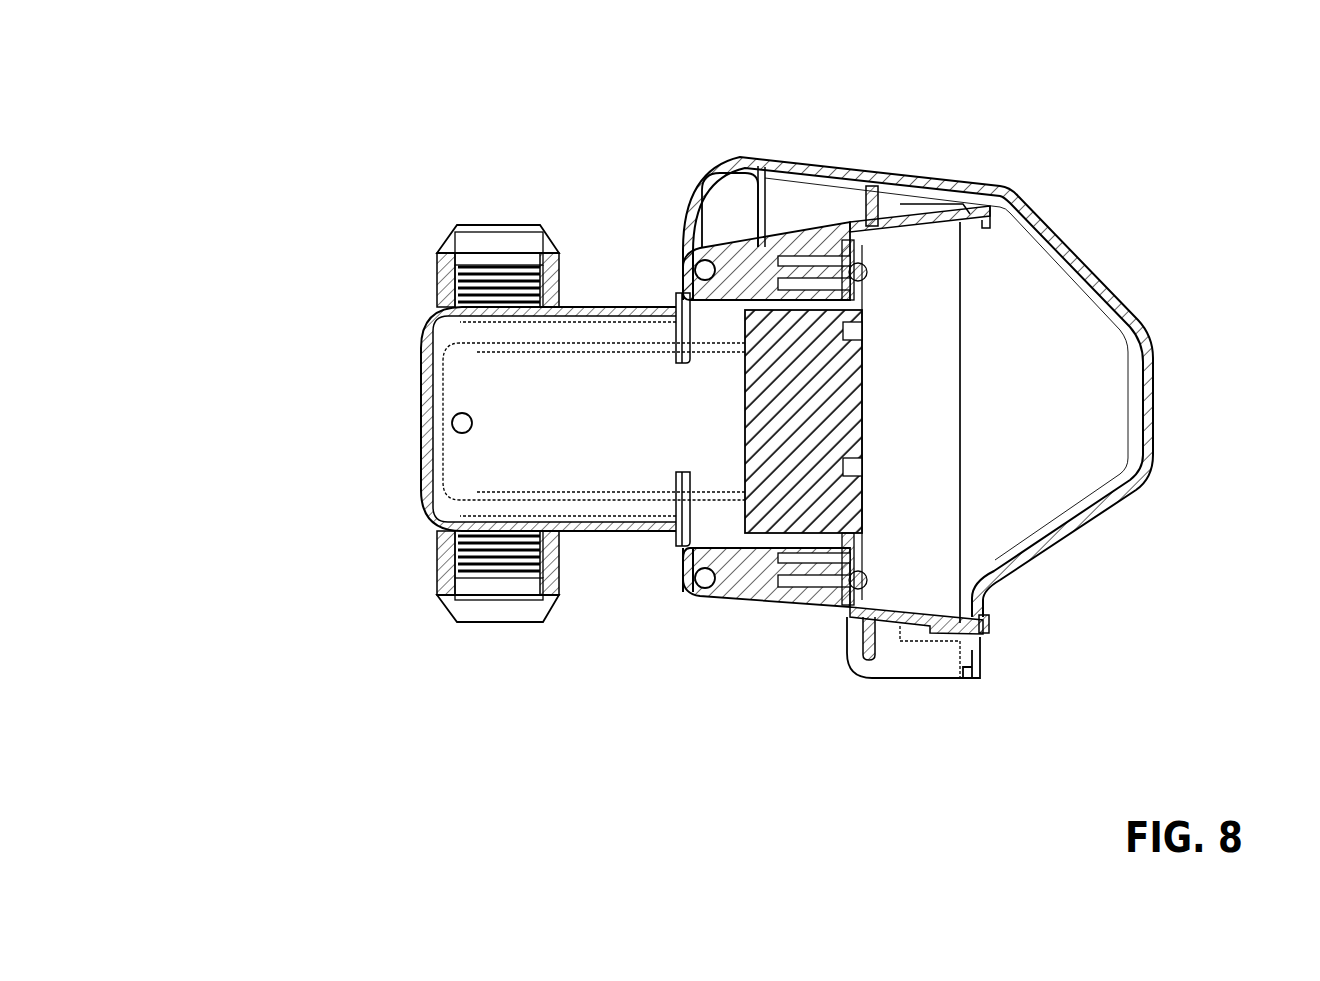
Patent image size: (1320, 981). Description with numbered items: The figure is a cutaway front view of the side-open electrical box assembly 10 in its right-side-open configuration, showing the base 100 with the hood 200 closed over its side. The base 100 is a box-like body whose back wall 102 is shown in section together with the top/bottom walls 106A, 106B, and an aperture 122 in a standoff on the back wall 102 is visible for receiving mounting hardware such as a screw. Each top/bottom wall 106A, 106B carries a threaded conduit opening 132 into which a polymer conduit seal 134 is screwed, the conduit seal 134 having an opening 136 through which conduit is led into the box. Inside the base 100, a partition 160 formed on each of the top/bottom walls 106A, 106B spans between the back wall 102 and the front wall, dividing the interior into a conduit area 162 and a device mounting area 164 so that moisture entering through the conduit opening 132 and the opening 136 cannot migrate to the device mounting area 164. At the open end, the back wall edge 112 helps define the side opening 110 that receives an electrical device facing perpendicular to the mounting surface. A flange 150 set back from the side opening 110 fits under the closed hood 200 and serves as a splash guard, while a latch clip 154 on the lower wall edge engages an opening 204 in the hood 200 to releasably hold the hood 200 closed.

The side-open electrical box assembly 10 is at (283, 84).
The base 100 is at (503, 405).
The back wall 102 is at (583, 467).
The top/bottom wall 106A is at (568, 304).
The top/bottom wall 106B is at (655, 548).
The side opening 110 is at (962, 425).
The back wall edge 112 is at (962, 357).
The aperture 122 is at (448, 434).
The conduit opening 132 is at (476, 334).
The conduit seal 134 is at (440, 229).
The opening 136 is at (451, 277).
The flange 150 is at (874, 188).
The latch clip 154 is at (990, 622).
The partition 160 is at (686, 355).
The conduit area 162 is at (594, 419).
The device mounting area 164 is at (781, 421).
The hood 200 is at (849, 364).
The opening 204 is at (990, 650).